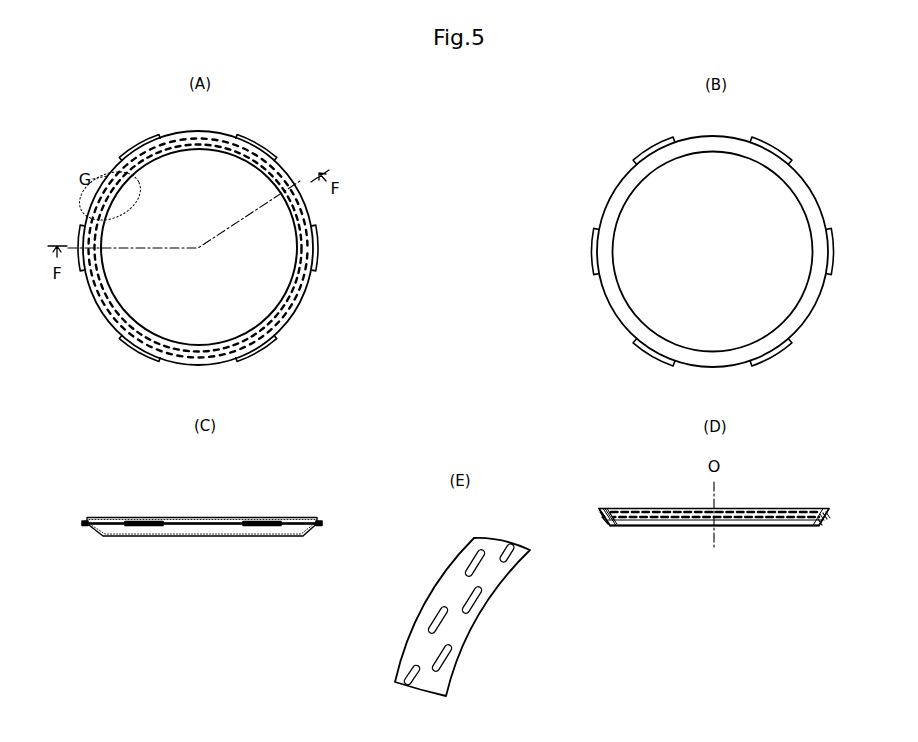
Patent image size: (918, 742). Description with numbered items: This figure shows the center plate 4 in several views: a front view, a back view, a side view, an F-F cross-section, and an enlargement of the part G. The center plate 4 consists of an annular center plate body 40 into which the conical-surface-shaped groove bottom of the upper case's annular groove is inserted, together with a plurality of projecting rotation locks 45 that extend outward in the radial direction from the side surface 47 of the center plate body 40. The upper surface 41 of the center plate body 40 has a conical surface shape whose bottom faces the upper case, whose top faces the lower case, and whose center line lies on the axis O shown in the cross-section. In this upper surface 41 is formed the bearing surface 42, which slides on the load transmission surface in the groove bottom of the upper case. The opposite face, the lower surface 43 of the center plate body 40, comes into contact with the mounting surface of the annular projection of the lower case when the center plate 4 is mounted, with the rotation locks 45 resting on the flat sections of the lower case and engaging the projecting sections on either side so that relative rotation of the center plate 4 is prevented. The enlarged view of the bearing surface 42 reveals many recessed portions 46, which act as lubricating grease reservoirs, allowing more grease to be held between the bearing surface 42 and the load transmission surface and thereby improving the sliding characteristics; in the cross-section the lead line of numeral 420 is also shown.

The center plate 4 is at (320, 105).
The center plate body 40 is at (283, 166).
The upper surface 41 is at (300, 283).
The bearing surface 42 is at (295, 312).
The lower surface 43 is at (812, 209).
The rotation locks 45 is at (137, 141).
The recessed portions 46 is at (468, 555).
The side surface 47 is at (200, 525).
The end portion of belt member 420 is at (831, 497).